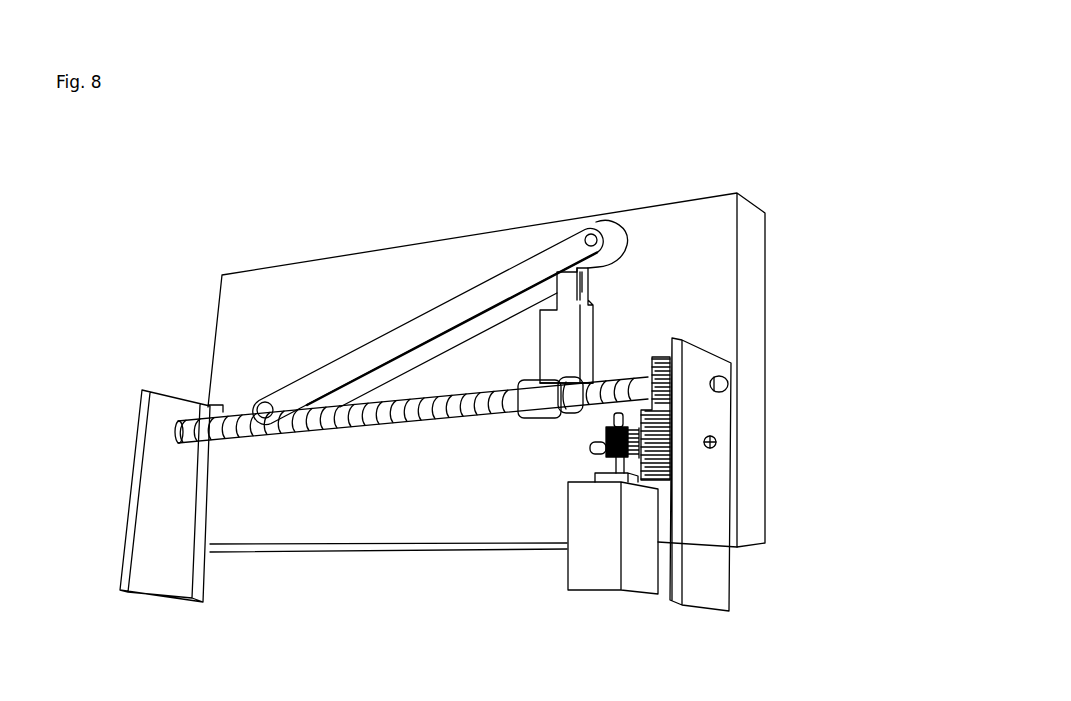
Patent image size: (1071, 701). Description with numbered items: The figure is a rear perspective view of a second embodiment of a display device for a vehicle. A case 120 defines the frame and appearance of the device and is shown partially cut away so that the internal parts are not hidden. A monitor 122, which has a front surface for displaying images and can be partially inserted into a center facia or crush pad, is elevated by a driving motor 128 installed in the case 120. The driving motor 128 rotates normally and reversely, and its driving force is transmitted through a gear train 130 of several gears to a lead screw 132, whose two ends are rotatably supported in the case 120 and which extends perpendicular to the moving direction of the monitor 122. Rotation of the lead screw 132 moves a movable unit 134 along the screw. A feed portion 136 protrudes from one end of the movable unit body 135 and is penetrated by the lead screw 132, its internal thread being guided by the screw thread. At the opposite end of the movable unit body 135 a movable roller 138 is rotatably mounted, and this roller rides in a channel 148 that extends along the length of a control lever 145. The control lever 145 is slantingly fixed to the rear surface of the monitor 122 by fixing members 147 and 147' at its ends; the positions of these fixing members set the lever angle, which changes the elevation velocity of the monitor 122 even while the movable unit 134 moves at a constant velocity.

The case 120 is at (165, 583).
The monitor 122 is at (343, 268).
The driving motor 128 is at (590, 570).
The gear train 130 is at (672, 387).
The lead screw 132 is at (613, 377).
The movable unit 134 is at (530, 332).
The movable unit body 135 is at (552, 352).
The feed portion 136 is at (532, 405).
The movable roller 138 is at (605, 253).
The control lever 145 is at (410, 328).
The fixing member 147 is at (223, 372).
The fixing member 147' is at (574, 198).
The channel 148 is at (480, 332).